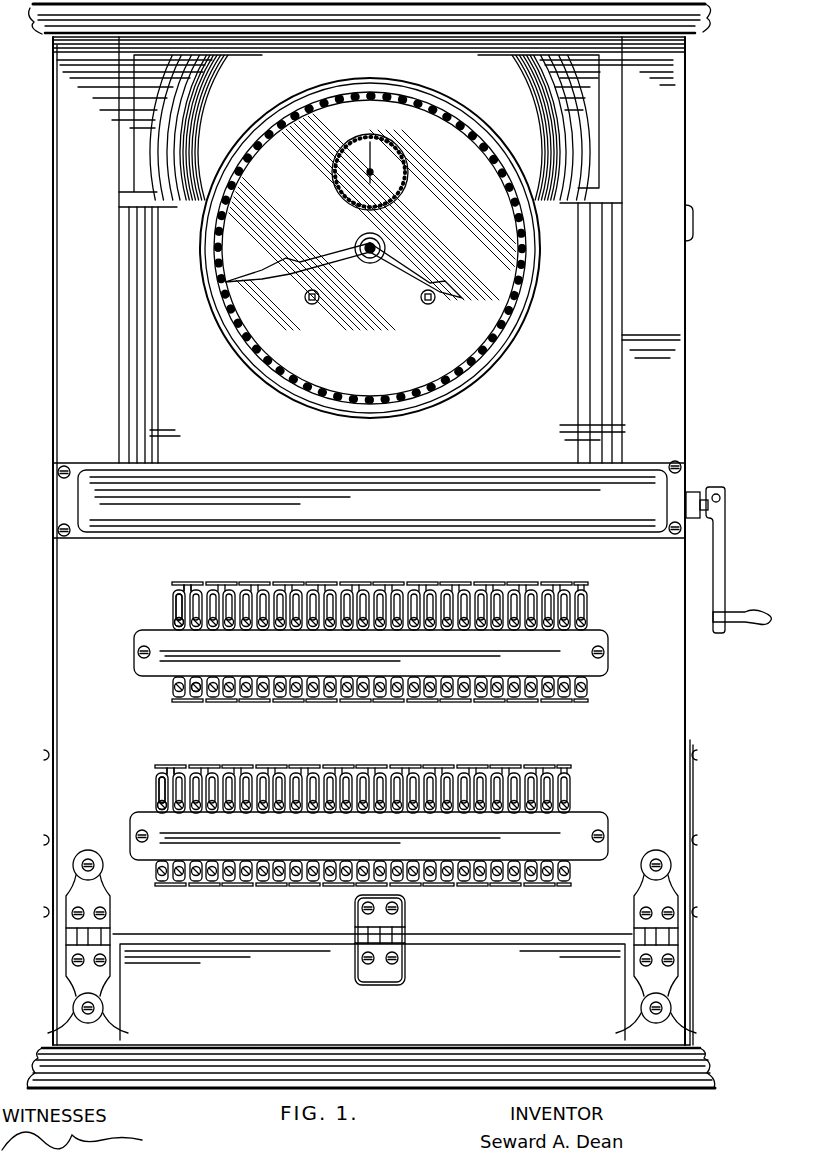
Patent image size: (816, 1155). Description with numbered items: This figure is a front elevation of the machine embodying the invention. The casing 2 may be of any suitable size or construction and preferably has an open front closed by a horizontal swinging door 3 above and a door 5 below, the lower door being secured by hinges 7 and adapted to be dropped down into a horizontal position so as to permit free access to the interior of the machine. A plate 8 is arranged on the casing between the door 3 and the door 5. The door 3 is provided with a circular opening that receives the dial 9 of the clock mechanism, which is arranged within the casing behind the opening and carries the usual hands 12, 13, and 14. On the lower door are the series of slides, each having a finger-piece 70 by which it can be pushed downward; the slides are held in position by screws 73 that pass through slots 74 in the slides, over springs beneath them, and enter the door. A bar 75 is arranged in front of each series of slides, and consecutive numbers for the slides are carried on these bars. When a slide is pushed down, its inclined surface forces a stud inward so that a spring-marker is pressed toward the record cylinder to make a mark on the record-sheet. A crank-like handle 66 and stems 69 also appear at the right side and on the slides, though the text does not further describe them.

The casing 2 is at (672, 302).
The horizontal swinging door 3 is at (368, 231).
The door 5 is at (150, 712).
The hinges 7 is at (111, 926).
The plate 8 is at (369, 499).
The dial 9 is at (359, 248).
The hand 12 is at (345, 252).
The hand 13 is at (412, 272).
The hand 14 is at (338, 188).
The operating crank handle 66 is at (722, 575).
The key stems 69 is at (260, 591).
The finger-pieces 70 is at (196, 582).
The screws 73 is at (174, 622).
The slots 74 is at (172, 602).
The bar 75 is at (585, 633).